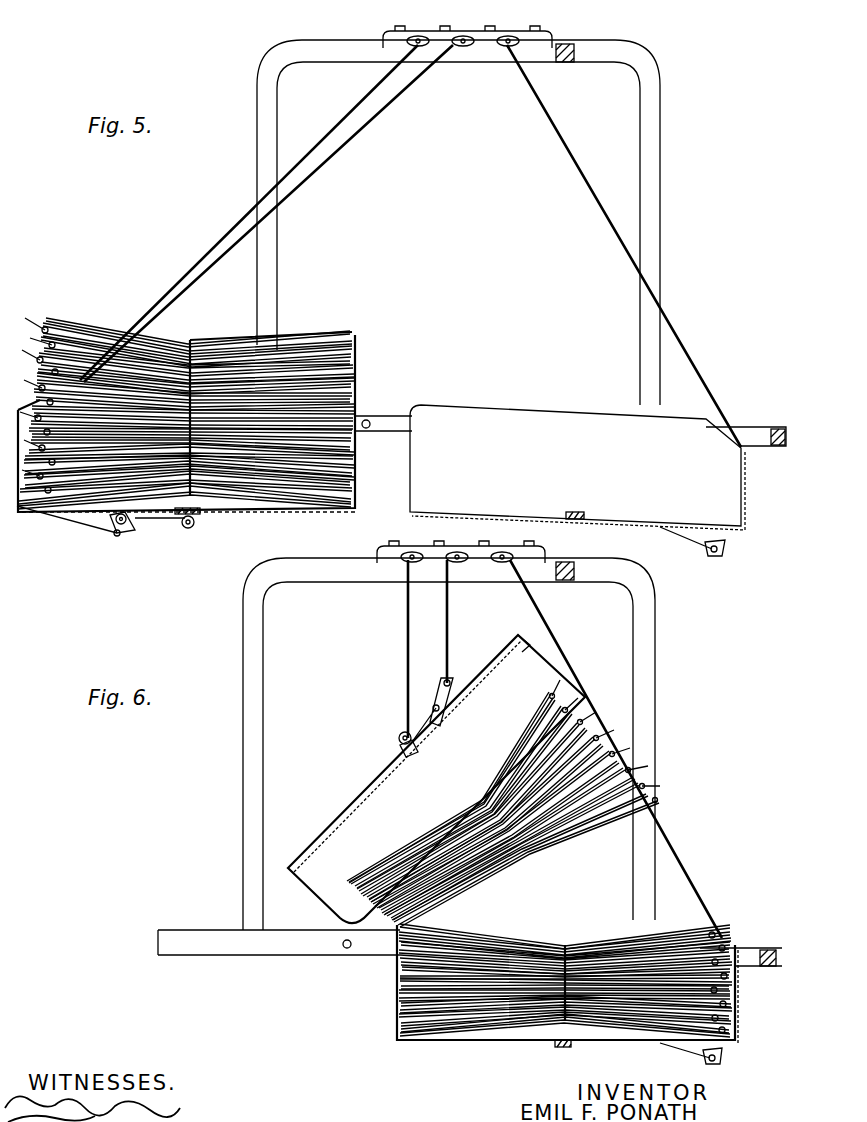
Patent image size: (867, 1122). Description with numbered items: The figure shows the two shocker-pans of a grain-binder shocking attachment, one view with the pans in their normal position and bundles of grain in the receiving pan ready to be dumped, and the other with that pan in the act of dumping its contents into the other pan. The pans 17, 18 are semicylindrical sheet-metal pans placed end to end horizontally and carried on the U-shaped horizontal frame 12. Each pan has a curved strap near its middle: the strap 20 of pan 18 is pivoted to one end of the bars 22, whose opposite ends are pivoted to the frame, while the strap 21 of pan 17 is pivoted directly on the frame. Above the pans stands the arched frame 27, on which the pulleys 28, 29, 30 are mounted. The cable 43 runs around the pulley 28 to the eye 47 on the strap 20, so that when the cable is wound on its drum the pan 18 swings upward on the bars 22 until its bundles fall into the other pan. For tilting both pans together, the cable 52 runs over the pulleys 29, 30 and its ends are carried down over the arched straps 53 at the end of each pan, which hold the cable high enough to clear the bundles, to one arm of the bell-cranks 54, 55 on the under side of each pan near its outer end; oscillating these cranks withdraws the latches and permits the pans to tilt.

In FIG. 5, the U-shaped horizontal frame 12 is at (762, 426).
In FIG. 6, the U-shaped horizontal frame 12 is at (742, 949).
In FIG. 5, the shocker-pan 17 is at (643, 516).
In FIG. 6, the shocker-pan 17 is at (515, 1041).
In FIG. 5, the shocker-pan 18 is at (243, 514).
In FIG. 6, the shocker-pan 18 is at (356, 803).
In FIG. 5, the curved strap 20 is at (189, 528).
In FIG. 6, the curved strap 20 is at (400, 748).
In FIG. 5, the curved strap 21 is at (572, 519).
In FIG. 6, the curved strap 21 is at (562, 1047).
In FIG. 5, the bars 22 is at (360, 400).
In FIG. 6, the bars 22 is at (372, 940).
In FIG. 5, the arched frame 27 is at (608, 62).
In FIG. 6, the arched frame 27 is at (625, 593).
In FIG. 5, the pulley 28 is at (431, 38).
In FIG. 6, the pulley 28 is at (416, 554).
In FIG. 5, the pulley 29 is at (466, 39).
In FIG. 6, the pulley 29 is at (463, 555).
In FIG. 5, the pulley 30 is at (515, 38).
In FIG. 6, the pulley 30 is at (500, 561).
In FIG. 5, the cable 43 is at (340, 120).
In FIG. 6, the cable 43 is at (406, 660).
In FIG. 5, the eye 47 is at (138, 518).
In FIG. 6, the eye 47 is at (402, 734).
In FIG. 5, the cable 52 is at (306, 177).
In FIG. 6, the cable 52 is at (449, 632).
In FIG. 5, the arched strap 53 is at (741, 488).
In FIG. 6, the arched strap 53 is at (531, 627).
In FIG. 5, the bell-crank 54 is at (730, 551).
In FIG. 6, the bell-crank 54 is at (716, 1060).
In FIG. 5, the bell-crank 55 is at (117, 536).
In FIG. 6, the bell-crank 55 is at (448, 684).